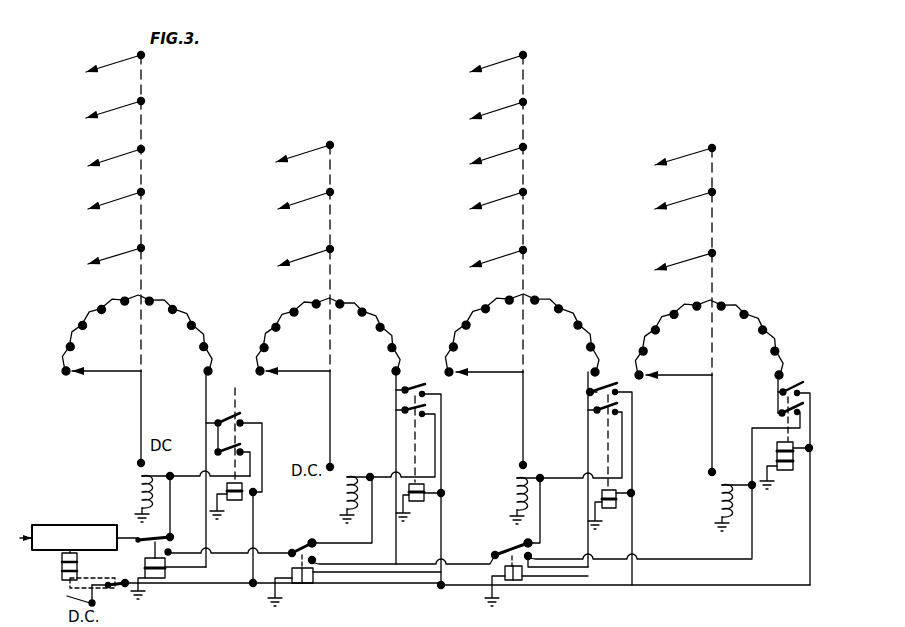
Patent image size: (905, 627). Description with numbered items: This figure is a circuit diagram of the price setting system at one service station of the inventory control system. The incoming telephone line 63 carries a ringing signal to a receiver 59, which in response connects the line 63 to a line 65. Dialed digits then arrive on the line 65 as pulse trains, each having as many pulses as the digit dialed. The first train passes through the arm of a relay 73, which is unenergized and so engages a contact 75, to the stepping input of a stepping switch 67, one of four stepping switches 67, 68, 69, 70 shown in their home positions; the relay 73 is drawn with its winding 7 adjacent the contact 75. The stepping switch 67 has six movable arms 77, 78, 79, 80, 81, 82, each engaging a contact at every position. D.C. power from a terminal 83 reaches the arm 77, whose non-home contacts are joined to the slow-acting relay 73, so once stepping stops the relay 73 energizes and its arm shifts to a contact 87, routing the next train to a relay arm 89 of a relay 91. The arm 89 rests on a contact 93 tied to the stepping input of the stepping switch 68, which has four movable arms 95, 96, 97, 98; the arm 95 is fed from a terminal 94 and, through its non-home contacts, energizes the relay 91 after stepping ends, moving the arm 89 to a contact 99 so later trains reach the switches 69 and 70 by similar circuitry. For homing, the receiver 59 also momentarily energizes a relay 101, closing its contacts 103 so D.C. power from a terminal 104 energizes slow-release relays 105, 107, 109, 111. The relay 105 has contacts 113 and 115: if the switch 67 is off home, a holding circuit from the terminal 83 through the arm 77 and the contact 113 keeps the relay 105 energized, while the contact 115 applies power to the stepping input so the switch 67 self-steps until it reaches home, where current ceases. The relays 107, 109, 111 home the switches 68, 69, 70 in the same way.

The relay coil 7 is at (155, 490).
The receiver 59 is at (105, 525).
The incoming telephone line 63 is at (32, 538).
The line 65 is at (134, 534).
The stepping switch 67 is at (150, 252).
The stepping switch 68 is at (336, 229).
The stepping switch 69 is at (527, 232).
The stepping switch 70 is at (716, 203).
The relay 73 is at (166, 582).
The contact 75 is at (173, 533).
The movable arm 77 is at (132, 369).
The movable arm 78 is at (138, 246).
The movable arm 79 is at (138, 191).
The movable arm 80 is at (138, 150).
The movable arm 81 is at (134, 102).
The movable arm 82 is at (136, 55).
The terminal 83 is at (138, 463).
The contact 87 is at (176, 558).
The relay arm 89 is at (298, 546).
The relay 91 is at (317, 585).
The contact 93 is at (315, 543).
The terminal 94 is at (327, 467).
The movable arm 95 is at (297, 373).
The movable arm 96 is at (328, 242).
The movable arm 97 is at (328, 186).
The movable arm 98 is at (328, 145).
The contact 99 is at (353, 564).
The relay 101 is at (77, 562).
The contacts 103 is at (103, 603).
The terminal 104 is at (70, 592).
The relay 105 is at (241, 501).
The relay 107 is at (423, 505).
The relay 109 is at (621, 504).
The relay 111 is at (777, 450).
The contact 113 is at (238, 413).
The contact 115 is at (228, 460).